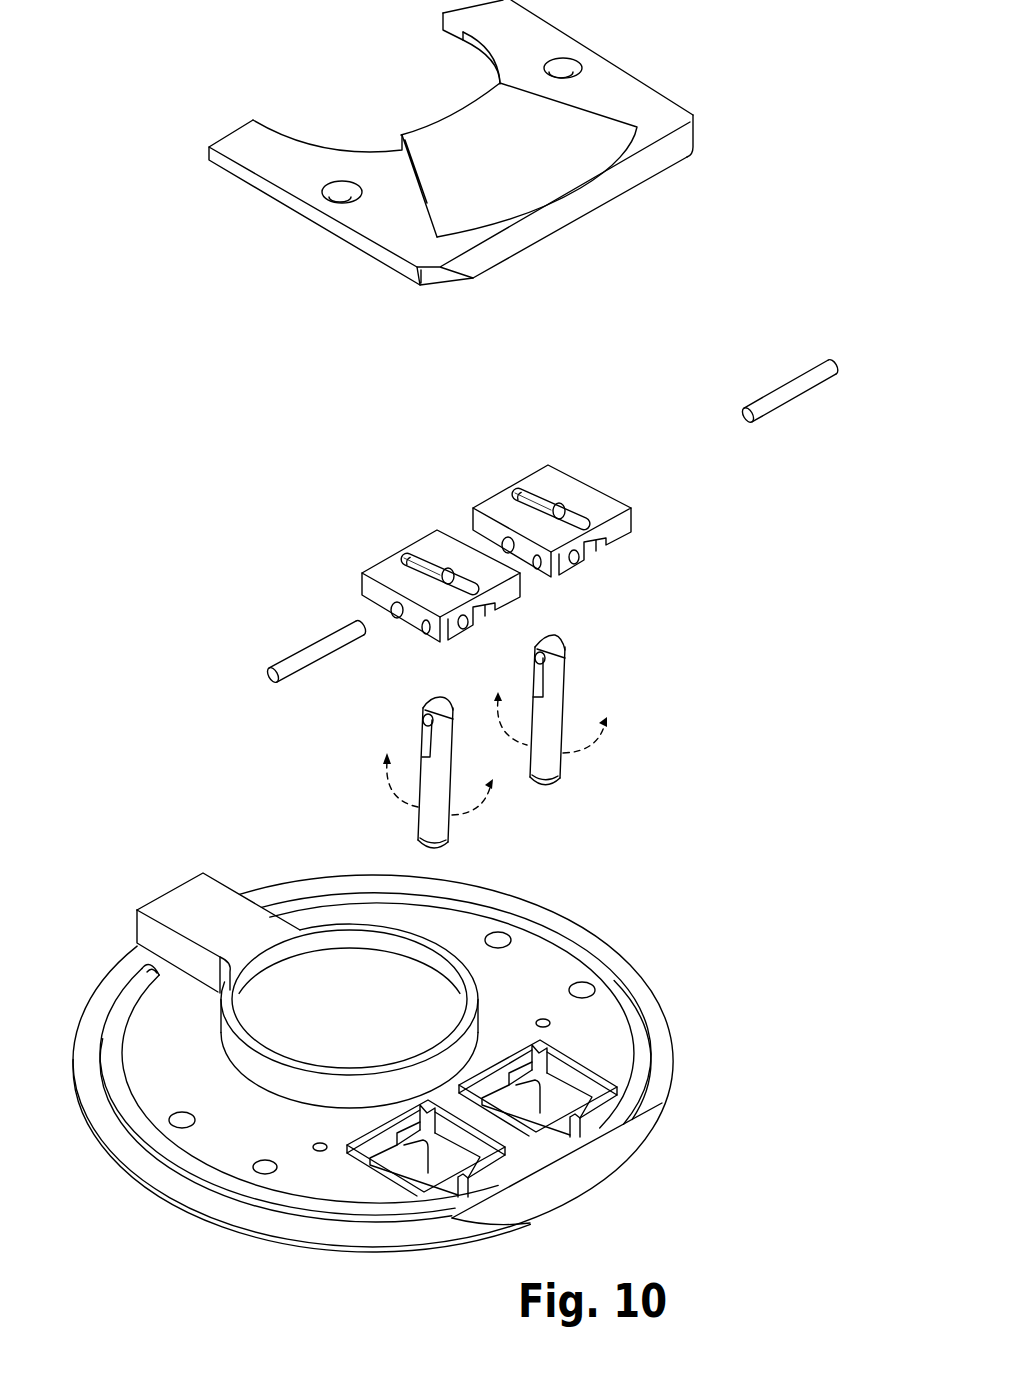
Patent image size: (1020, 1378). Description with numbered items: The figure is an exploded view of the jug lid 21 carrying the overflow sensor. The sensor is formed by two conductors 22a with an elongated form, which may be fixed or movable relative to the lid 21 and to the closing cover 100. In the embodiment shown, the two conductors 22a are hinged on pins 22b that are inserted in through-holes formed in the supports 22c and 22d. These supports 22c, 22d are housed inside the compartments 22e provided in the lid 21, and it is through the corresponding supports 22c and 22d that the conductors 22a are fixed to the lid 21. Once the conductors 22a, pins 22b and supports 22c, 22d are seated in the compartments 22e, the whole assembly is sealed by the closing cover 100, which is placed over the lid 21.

The closing cover 100 is at (630, 97).
The lid 21 is at (183, 912).
The conductors 22a is at (545, 770).
The pins 22b is at (810, 378).
The support 22c is at (505, 600).
The support 22d is at (567, 562).
The compartments 22e is at (547, 505).